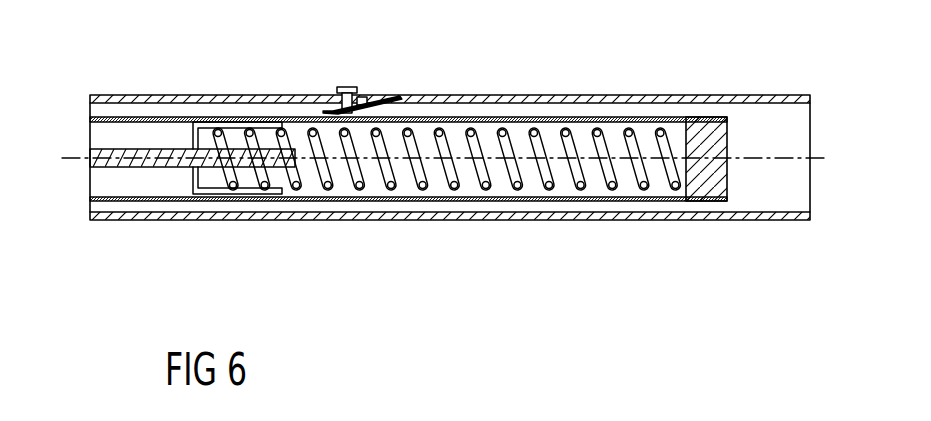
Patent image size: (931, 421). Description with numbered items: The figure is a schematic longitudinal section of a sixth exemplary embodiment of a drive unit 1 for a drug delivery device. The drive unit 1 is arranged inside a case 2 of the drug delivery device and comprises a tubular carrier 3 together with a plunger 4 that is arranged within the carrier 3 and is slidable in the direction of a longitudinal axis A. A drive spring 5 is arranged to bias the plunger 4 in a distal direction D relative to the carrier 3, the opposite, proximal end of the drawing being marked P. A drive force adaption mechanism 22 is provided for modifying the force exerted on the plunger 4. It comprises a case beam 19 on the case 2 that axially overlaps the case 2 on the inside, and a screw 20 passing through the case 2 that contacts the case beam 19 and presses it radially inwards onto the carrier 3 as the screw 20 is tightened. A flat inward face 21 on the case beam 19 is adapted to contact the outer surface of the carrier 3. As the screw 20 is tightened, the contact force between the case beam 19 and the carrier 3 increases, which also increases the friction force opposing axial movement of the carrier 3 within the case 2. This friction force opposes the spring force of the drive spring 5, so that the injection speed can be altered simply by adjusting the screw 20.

The drive unit 1 is at (473, 111).
The case 2 is at (177, 96).
The tubular carrier 3 is at (615, 118).
The plunger 4 is at (163, 163).
The drive spring 5 is at (547, 187).
The case beam 19 is at (331, 97).
The screw 20 is at (346, 87).
The flat inward face 21 is at (293, 116).
The drive force adaption mechanism 22 is at (378, 96).
The longitudinal axis A is at (397, 160).
The distal direction D is at (49, 158).
The proximal direction P is at (847, 158).